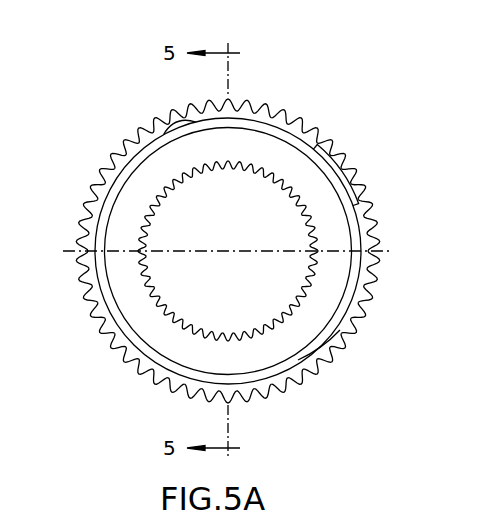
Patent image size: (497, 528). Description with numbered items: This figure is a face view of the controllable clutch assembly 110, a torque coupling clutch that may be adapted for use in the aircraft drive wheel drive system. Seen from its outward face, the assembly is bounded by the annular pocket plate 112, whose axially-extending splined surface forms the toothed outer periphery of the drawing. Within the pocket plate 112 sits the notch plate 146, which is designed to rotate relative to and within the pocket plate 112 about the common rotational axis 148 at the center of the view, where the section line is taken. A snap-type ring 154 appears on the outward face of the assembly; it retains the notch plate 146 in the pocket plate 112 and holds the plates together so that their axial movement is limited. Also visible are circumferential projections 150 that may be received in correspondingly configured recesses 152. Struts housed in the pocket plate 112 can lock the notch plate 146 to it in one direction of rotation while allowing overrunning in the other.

The controllable clutch assembly 110 is at (296, 62).
The annular pocket plate 112 is at (400, 297).
The notch plate 146 is at (343, 345).
The common rotational axis 148 is at (225, 255).
The circumferential projections 150 is at (332, 147).
The recesses 152 is at (171, 132).
The snap-type ring 154 is at (128, 162).